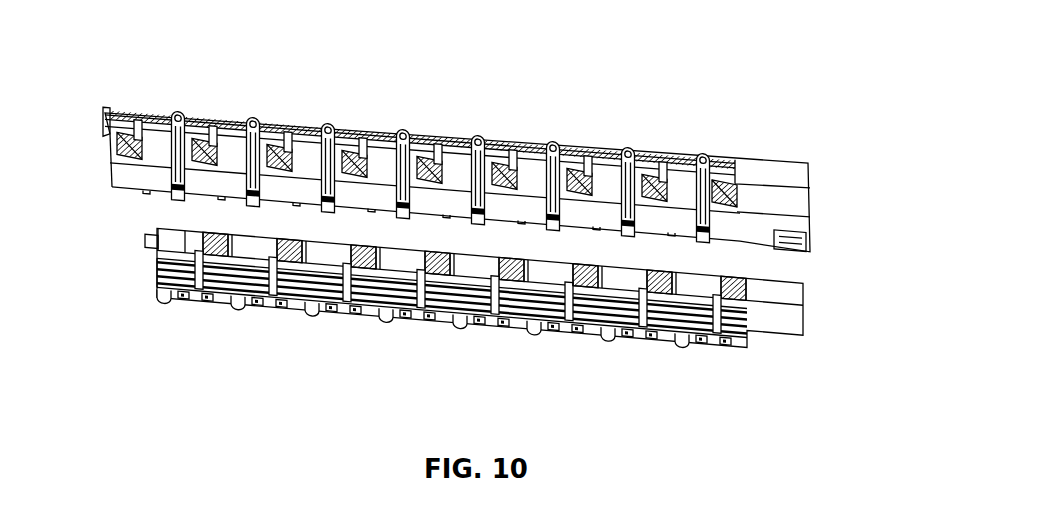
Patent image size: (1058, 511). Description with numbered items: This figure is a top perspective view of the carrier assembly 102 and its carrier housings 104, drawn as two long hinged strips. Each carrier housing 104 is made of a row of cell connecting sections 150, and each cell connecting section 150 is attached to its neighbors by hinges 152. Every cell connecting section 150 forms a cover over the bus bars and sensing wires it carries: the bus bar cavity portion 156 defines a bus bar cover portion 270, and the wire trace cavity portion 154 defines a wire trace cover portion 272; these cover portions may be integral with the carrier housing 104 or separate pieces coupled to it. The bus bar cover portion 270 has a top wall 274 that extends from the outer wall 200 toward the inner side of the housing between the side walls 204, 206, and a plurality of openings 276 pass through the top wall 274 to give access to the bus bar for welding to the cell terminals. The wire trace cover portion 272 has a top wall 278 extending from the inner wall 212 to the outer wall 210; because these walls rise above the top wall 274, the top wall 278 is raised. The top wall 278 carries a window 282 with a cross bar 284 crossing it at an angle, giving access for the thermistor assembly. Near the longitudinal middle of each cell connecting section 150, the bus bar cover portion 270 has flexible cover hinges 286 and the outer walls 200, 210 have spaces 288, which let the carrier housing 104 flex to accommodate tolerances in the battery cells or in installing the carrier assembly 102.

The carrier assembly 102 is at (693, 38).
The carrier housing 104 is at (832, 158).
The cell connecting section 150 is at (366, 129).
The hinge 152 is at (252, 118).
The wire trace cavity portion 154 is at (208, 120).
The bus bar cavity portion 156 is at (137, 112).
The outer wall 200 is at (230, 120).
The side wall 204 is at (155, 284).
The side wall 206 is at (229, 300).
The outer wall 210 is at (122, 183).
The inner wall 212 is at (185, 248).
The bus bar cover portion 270 is at (325, 311).
The wire trace cover portion 272 is at (346, 299).
The top wall 274 is at (418, 321).
The opening 276 is at (390, 324).
The top wall 278 is at (446, 316).
The window 282 is at (509, 245).
The cross bar 284 is at (546, 272).
The flexible cover hinge 286 is at (513, 321).
The space 288 is at (598, 236).